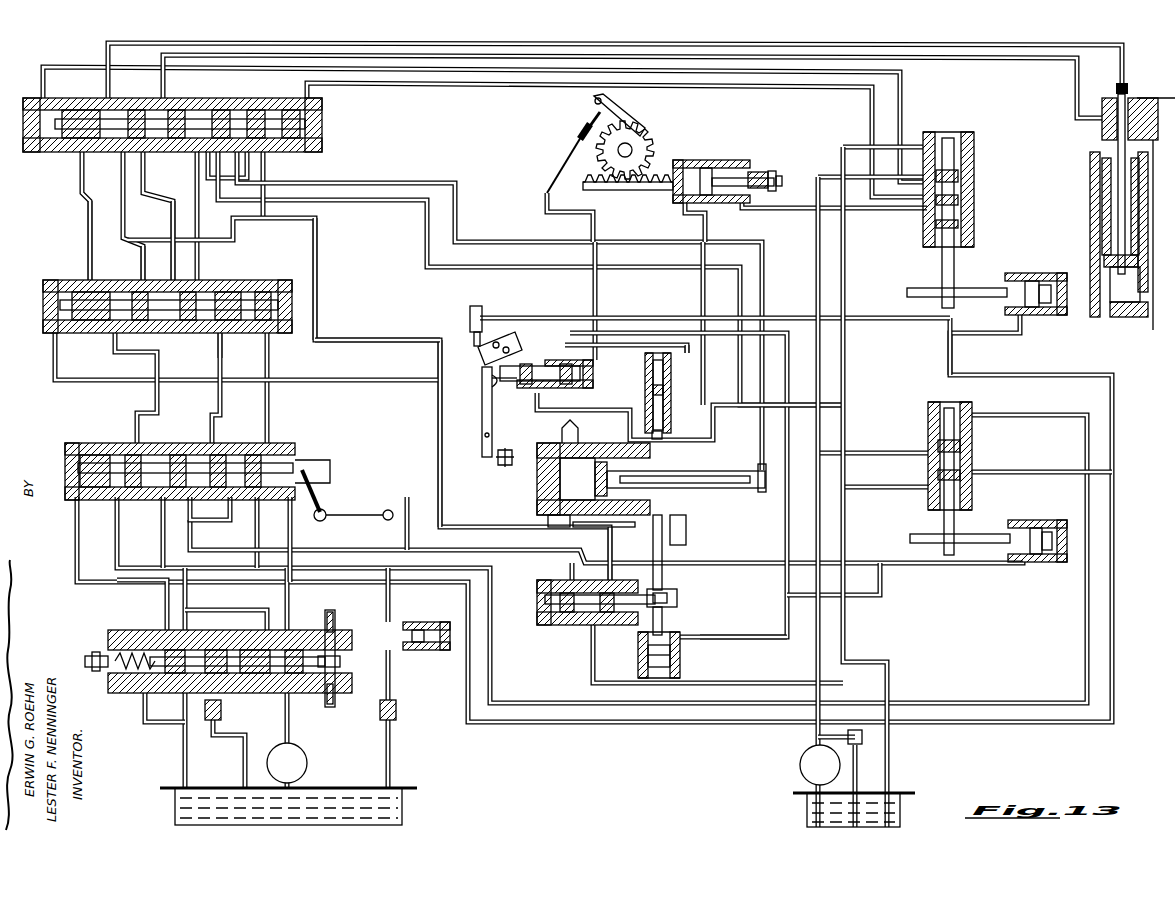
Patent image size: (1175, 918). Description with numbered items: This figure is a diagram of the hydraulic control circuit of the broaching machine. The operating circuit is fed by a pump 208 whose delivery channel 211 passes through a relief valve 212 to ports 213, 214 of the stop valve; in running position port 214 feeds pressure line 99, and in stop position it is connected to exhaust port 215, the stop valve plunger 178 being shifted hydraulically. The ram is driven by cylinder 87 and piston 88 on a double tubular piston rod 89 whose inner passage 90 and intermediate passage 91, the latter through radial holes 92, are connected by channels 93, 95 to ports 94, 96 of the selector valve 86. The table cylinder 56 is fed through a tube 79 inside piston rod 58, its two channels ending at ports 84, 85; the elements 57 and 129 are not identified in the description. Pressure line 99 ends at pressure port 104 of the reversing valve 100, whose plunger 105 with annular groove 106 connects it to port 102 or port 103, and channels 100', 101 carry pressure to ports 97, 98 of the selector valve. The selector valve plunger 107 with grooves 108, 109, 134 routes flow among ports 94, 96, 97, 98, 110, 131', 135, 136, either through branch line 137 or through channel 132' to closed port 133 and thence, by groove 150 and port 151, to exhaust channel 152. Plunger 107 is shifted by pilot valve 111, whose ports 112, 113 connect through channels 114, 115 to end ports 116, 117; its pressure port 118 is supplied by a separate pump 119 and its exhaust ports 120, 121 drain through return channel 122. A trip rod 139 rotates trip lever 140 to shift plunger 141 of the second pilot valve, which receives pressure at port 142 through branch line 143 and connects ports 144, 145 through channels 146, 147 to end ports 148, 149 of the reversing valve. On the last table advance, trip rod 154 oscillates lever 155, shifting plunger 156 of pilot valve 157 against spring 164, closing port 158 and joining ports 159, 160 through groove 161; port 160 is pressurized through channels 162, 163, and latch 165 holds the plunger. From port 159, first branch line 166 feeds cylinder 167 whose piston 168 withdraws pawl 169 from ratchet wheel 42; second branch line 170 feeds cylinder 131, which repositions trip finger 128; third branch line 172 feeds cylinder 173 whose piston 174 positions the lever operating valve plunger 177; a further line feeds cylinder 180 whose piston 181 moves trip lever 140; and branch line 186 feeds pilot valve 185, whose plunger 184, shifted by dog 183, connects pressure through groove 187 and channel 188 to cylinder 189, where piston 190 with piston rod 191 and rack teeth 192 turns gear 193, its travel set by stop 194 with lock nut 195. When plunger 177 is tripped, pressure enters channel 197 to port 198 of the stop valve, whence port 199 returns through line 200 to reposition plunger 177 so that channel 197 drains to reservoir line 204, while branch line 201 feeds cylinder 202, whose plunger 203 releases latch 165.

The ratchet wheel 42 is at (647, 135).
The cylinder 56 is at (545, 495).
The cylinder wall 57 is at (603, 440).
The piston rod 58 is at (728, 490).
The tube 79 is at (762, 490).
The port 84 is at (235, 160).
The port 85 is at (265, 160).
The selector valve 86 is at (322, 148).
The cylinder 87 is at (1090, 218).
The piston 88 is at (1110, 318).
The double tubular piston rod 89 is at (1106, 240).
The inner passage 90 is at (1118, 190).
The intermediate passage 91 is at (1104, 258).
The radial holes 92 is at (1095, 305).
The channel 93 is at (1125, 72).
The port 94 is at (105, 112).
The channel 95 is at (1077, 115).
The port 96 is at (170, 110).
The port 97 is at (123, 180).
The port 98 is at (197, 165).
The pressure line 99 is at (220, 410).
The reversing valve 100 is at (175, 276).
The channel 100' is at (352, 398).
The channel 101 is at (173, 230).
The port 102 is at (245, 280).
The port 103 is at (190, 280).
The pressure port 104 is at (222, 338).
The reversing valve plunger 105 is at (58, 305).
The annular groove 106 is at (292, 302).
The selector valve plunger 107 is at (70, 145).
The annular groove 108 is at (75, 150).
The annular groove 109 is at (140, 112).
The exhaust port 110 is at (143, 160).
The pilot valve 111 is at (941, 250).
The port 112 is at (915, 212).
The port 113 is at (930, 150).
The channel 114 is at (872, 113).
The channel 115 is at (902, 90).
The port 116 is at (40, 100).
The port 117 is at (322, 100).
The pressure port 118 is at (923, 165).
The pump 119 is at (800, 765).
The exhaust port 120 is at (936, 225).
The exhaust port 121 is at (950, 135).
The return channel 122 is at (843, 375).
The trip finger 128 is at (540, 628).
The conduit 129 is at (752, 637).
The cylinder 131 is at (1036, 281).
The port 131' is at (64, 216).
The channel 132' is at (64, 240).
The port 133 is at (80, 292).
The annular groove 134 is at (215, 110).
The port 135 is at (255, 110).
The port 136 is at (300, 138).
The branch line 137 is at (263, 190).
The trip rod 139 is at (615, 530).
The trip lever 140 is at (686, 540).
The pilot valve plunger 141 is at (677, 598).
The pressure port 142 is at (580, 626).
The branch line 143 is at (593, 660).
The port 144 is at (572, 578).
The port 145 is at (612, 560).
The channel 146 is at (440, 413).
The channel 147 is at (395, 336).
The port 148 is at (55, 335).
The port 149 is at (292, 325).
The annular groove 150 is at (135, 292).
The port 151 is at (115, 340).
The exhaust channel 152 is at (315, 248).
The trip rod 154 is at (508, 468).
The lever 155 is at (482, 405).
The plunger 156 is at (482, 380).
The pilot valve 157 is at (593, 362).
The port 158 is at (530, 385).
The port 159 is at (568, 333).
The port 160 is at (598, 325).
The annular groove 161 is at (510, 340).
The channel 162 is at (680, 345).
The channel 163 is at (787, 540).
The spring 164 is at (593, 372).
The spring-actuated latch 165 is at (505, 335).
The first branch line 166 is at (547, 205).
The cylinder 167 is at (582, 130).
The piston 168 is at (595, 115).
The pawl 169 is at (630, 110).
The second branch line 170 is at (975, 333).
The third branch line 172 is at (905, 595).
The cylinder 173 is at (1040, 520).
The piston 174 is at (1030, 562).
The valve plunger 177 is at (940, 440).
The stop valve plunger 178 is at (305, 465).
The cylinder 180 is at (680, 663).
The piston 181 is at (648, 650).
The dog 183 is at (562, 428).
The plunger 184 is at (662, 425).
The pilot valve 185 is at (672, 387).
The branch line 186 is at (672, 373).
The annular groove 187 is at (652, 400).
The channel 188 is at (703, 275).
The cylinder 189 is at (680, 170).
The piston 190 is at (718, 165).
The piston rod 191 is at (685, 208).
The rack teeth 192 is at (655, 175).
The gear 193 is at (572, 150).
The stop 194 is at (755, 170).
The lock nut 195 is at (775, 172).
The channel 197 is at (1112, 585).
The port 198 is at (65, 470).
The port 199 is at (117, 510).
The return line 200 is at (1005, 692).
The branch line 201 is at (1095, 375).
The cylinder 202 is at (470, 312).
The plunger 203 is at (473, 330).
The reservoir line 204 is at (915, 487).
The pump 208 is at (300, 758).
The delivery channel 211 is at (290, 720).
The relief valve 212 is at (325, 625).
The port 213 is at (163, 515).
The port 214 is at (235, 515).
The exhaust port 215 is at (268, 500).